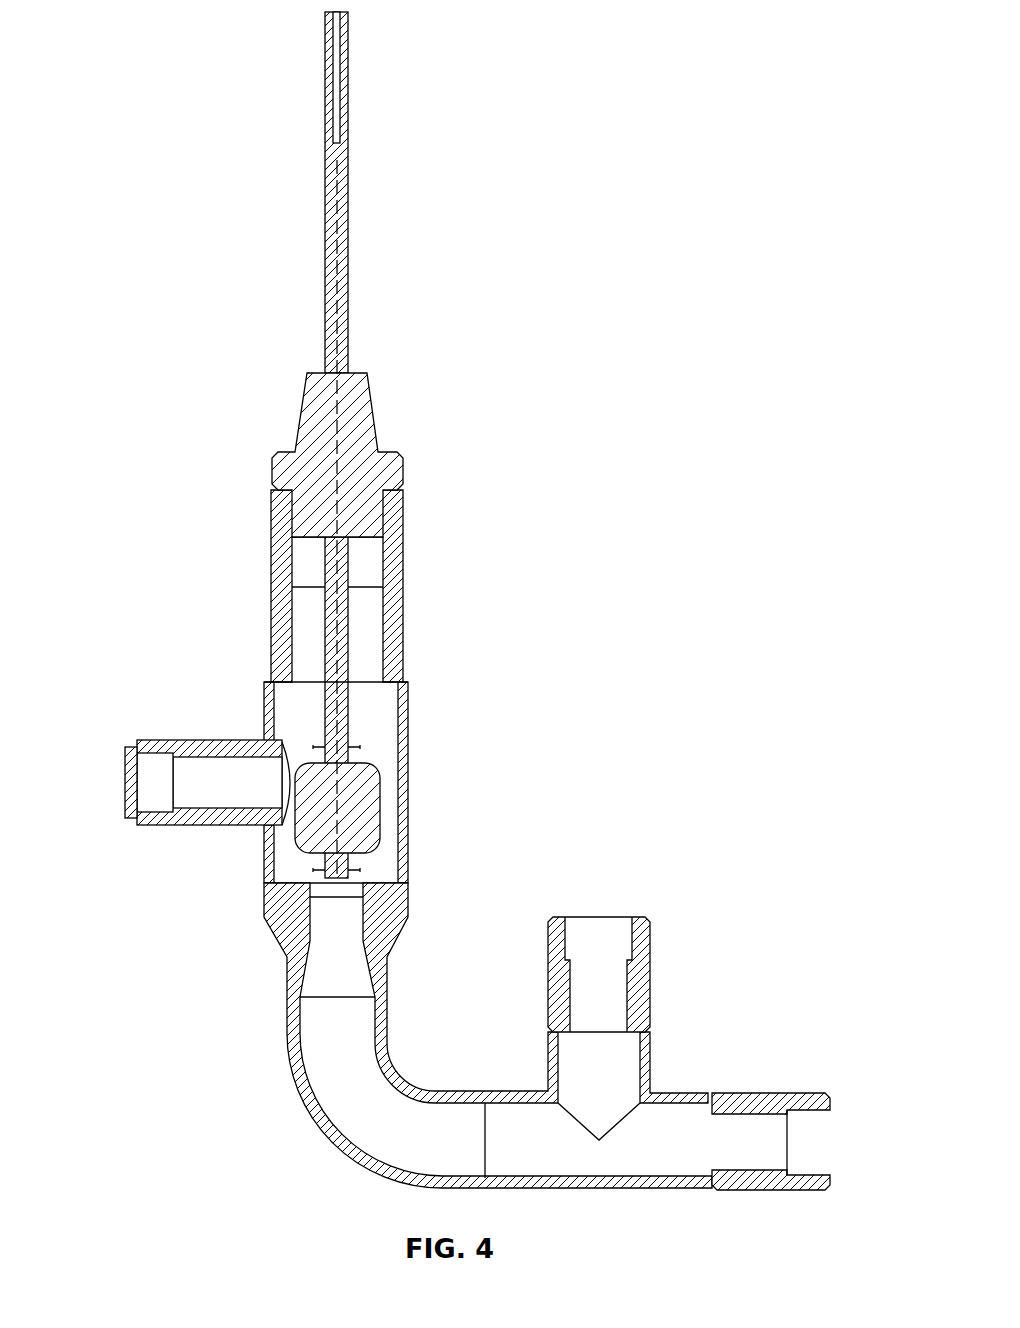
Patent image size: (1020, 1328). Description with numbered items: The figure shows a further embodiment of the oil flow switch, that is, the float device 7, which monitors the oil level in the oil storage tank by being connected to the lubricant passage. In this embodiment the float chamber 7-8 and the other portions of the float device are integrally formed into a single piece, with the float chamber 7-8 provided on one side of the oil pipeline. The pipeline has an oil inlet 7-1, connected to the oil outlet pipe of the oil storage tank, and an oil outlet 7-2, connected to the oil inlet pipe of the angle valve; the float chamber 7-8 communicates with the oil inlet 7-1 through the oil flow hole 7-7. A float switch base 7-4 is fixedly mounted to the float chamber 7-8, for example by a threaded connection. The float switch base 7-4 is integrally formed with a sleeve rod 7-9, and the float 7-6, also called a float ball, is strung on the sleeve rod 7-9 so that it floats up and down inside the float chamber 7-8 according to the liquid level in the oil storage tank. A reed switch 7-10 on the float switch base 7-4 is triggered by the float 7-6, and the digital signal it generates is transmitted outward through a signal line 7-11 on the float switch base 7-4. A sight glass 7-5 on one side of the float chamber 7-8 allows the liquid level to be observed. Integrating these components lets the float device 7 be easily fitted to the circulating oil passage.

The float device 7 is at (724, 176).
The oil inlet 7-1 is at (800, 1137).
The oil outlet 7-2 is at (602, 935).
The float switch base 7-4 is at (360, 373).
The sight glass 7-5 is at (147, 778).
The float 7-6 is at (300, 843).
The oil flow hole 7-7 is at (337, 923).
The float chamber 7-8 is at (426, 754).
The sleeve rod 7-9 is at (309, 749).
The reed switch 7-10 is at (320, 509).
The signal line 7-11 is at (309, 75).